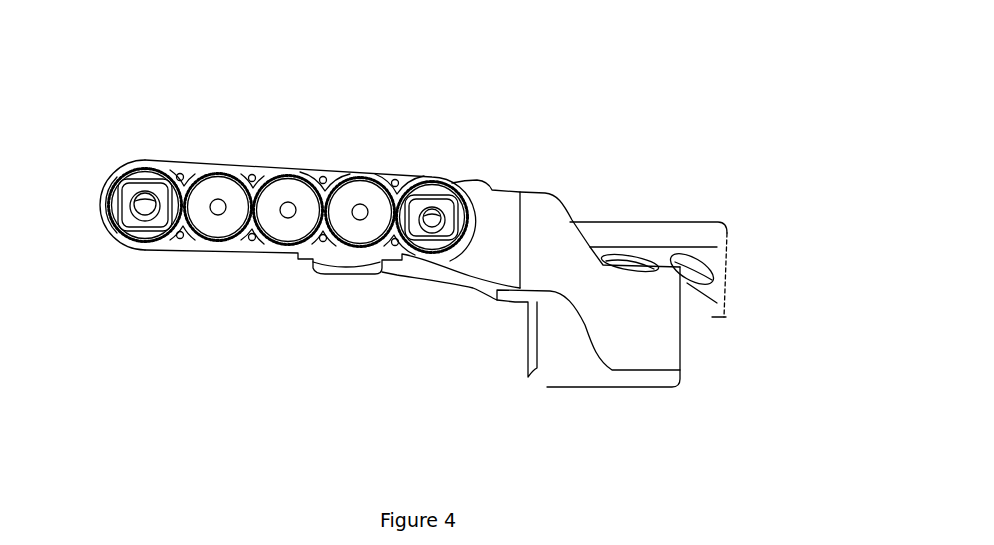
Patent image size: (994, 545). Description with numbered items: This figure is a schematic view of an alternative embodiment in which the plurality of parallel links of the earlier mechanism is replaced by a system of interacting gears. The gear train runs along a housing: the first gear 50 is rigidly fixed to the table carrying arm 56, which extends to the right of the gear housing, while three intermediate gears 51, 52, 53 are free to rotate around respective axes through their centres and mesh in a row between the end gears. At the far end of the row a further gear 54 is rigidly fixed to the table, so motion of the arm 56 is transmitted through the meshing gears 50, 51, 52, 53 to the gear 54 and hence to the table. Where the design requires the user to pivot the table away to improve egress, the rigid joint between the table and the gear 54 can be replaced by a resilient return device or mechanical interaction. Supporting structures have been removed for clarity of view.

The first gear 50 is at (434, 189).
The gear 51 is at (367, 242).
The gear 52 is at (295, 233).
The gear 53 is at (207, 232).
The further gear 54 is at (142, 167).
The table carrying arm 56 is at (560, 293).